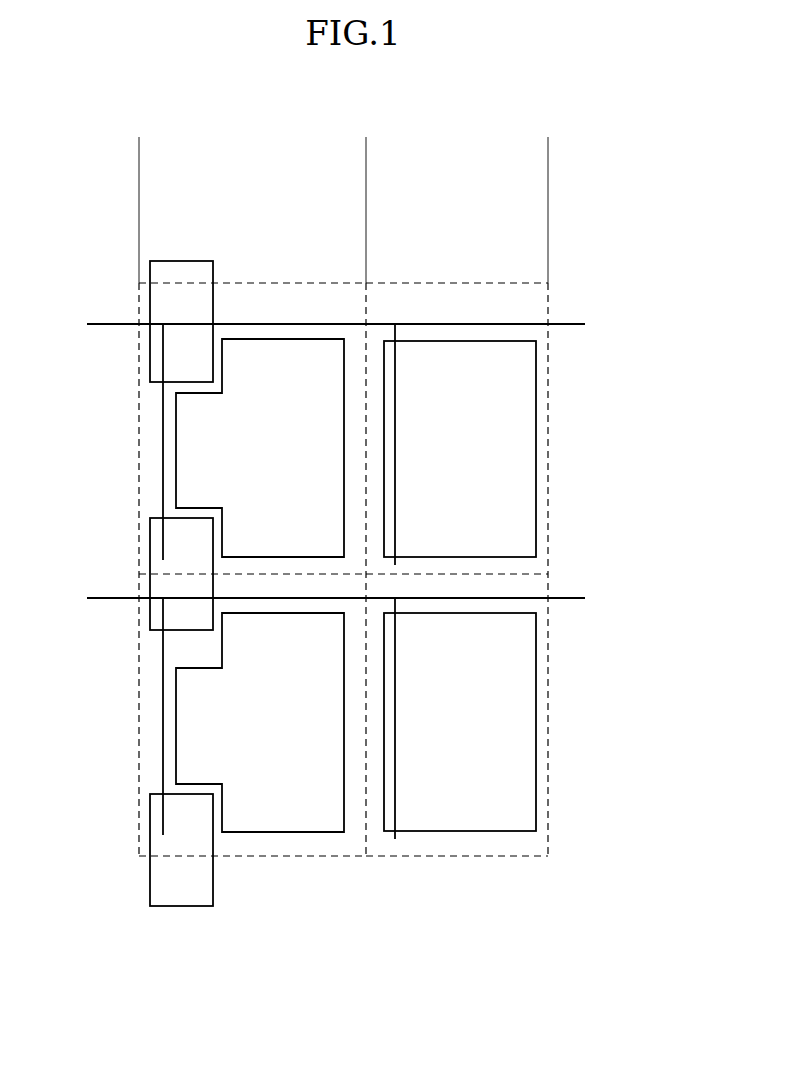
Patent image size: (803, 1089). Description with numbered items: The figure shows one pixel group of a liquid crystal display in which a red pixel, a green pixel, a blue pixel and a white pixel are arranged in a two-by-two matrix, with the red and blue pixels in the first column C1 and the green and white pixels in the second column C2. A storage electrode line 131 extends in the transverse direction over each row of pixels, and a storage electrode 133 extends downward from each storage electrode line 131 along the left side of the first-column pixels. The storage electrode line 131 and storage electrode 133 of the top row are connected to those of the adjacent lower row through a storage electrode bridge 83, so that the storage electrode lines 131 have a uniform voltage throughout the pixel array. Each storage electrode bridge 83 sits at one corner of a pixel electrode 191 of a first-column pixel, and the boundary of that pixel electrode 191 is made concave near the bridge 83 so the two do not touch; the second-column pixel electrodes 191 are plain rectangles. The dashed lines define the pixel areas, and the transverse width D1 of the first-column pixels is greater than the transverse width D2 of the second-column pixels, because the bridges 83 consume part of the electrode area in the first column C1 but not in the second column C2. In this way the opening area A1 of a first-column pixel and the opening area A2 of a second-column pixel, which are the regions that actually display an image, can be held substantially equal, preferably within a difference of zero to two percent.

The storage electrode line 131 is at (570, 323).
The storage electrode 133 is at (163, 403).
The storage electrode bridge 83 is at (125, 583).
The pixel electrode 191 is at (421, 585).
The opening area A1 is at (150, 542).
The opening area A2 is at (536, 421).
The first column C1 is at (281, 272).
The second column C2 is at (469, 272).
The transverse width D1 is at (154, 145).
The transverse width D2 is at (381, 145).